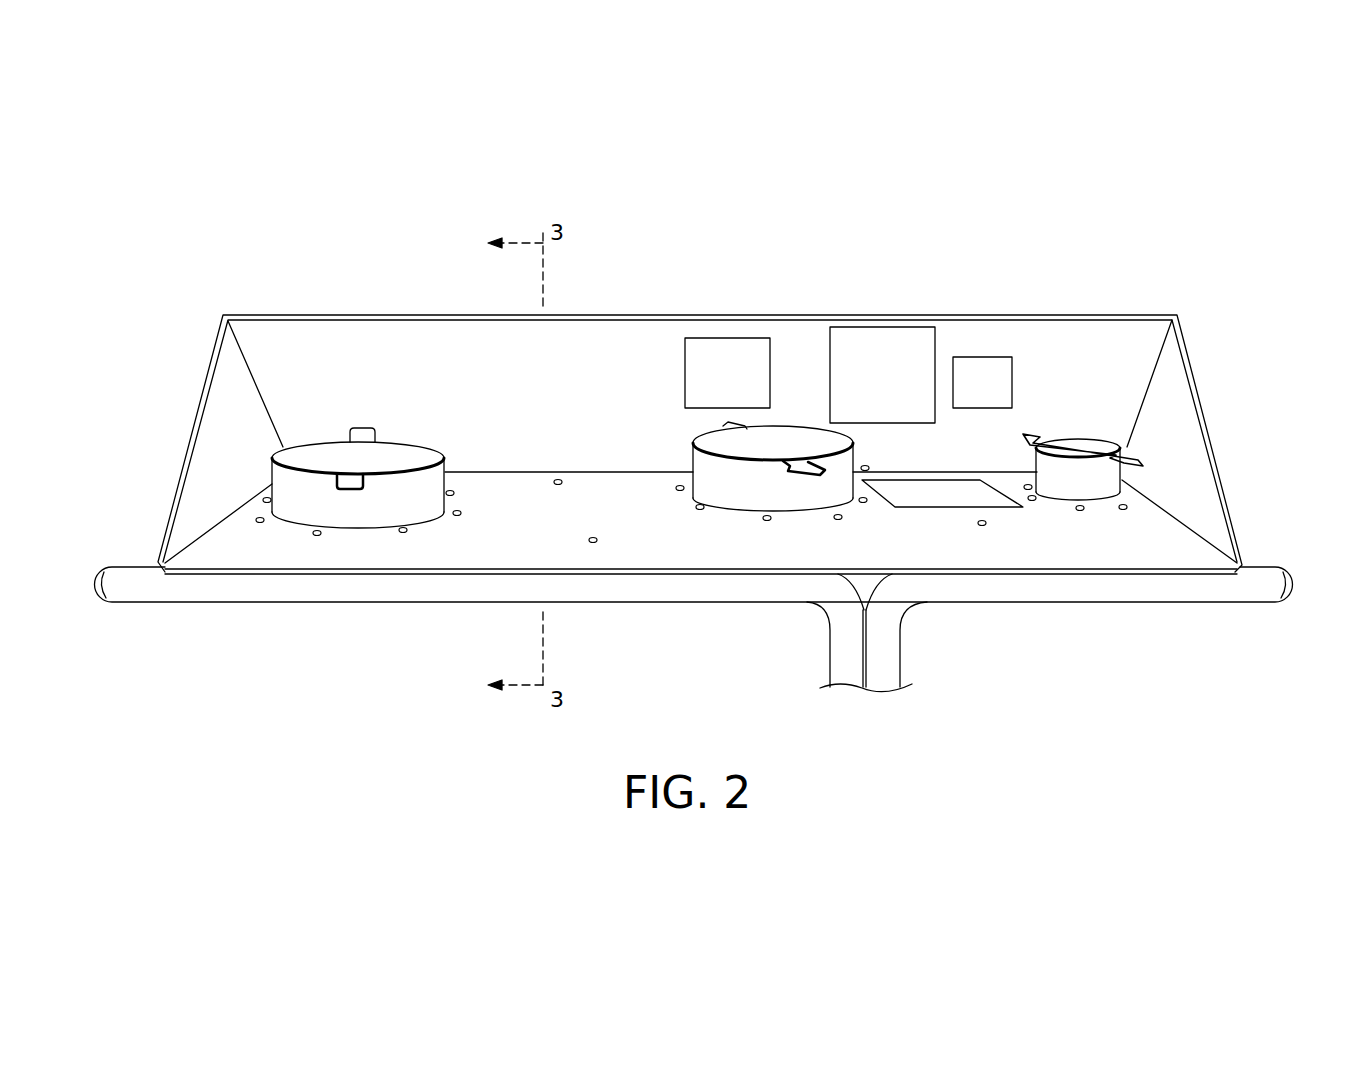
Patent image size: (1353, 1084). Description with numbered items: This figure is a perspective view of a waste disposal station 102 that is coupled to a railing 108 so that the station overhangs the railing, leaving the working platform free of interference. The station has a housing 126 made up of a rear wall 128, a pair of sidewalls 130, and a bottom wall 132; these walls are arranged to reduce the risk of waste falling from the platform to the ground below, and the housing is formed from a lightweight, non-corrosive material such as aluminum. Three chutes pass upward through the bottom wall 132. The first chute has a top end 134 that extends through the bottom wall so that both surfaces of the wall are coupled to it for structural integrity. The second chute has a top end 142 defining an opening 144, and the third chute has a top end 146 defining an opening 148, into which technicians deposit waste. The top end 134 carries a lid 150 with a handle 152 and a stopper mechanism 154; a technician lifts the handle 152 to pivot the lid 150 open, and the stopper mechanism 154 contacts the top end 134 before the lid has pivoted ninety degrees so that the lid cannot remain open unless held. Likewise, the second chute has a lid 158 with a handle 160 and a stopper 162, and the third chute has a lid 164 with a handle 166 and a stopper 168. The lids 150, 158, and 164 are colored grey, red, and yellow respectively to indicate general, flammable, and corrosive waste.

The waste disposal station 102 is at (1157, 277).
The railing 108 is at (112, 572).
The housing 126 is at (872, 317).
The rear wall 128 is at (620, 337).
The sidewalls 130 is at (198, 472).
The bottom wall 132 is at (650, 550).
The top end 134 is at (417, 502).
The top end 142 is at (758, 490).
The opening 144 is at (799, 420).
The top end 146 is at (1060, 490).
The opening 148 is at (1103, 433).
The lid 150 is at (287, 452).
The handle 152 is at (352, 480).
The stopper mechanism 154 is at (365, 430).
The lid 158 is at (703, 442).
The handle 160 is at (790, 473).
The stopper 162 is at (727, 425).
The lid 164 is at (1088, 447).
The handle 166 is at (1133, 457).
The stopper 168 is at (1030, 438).